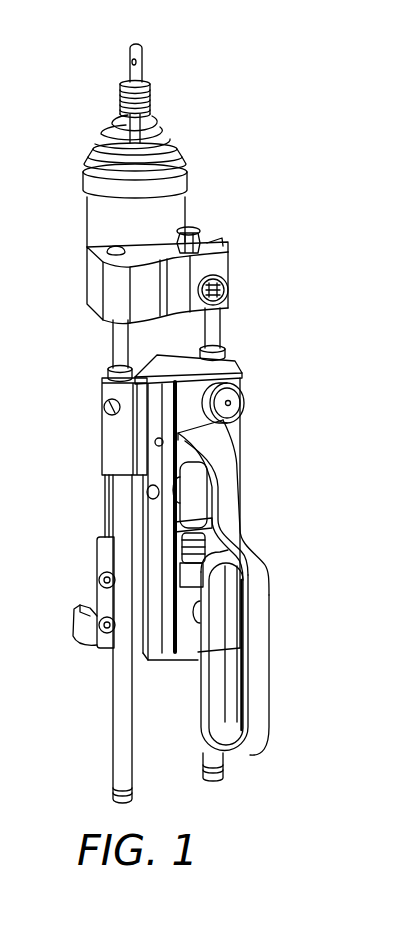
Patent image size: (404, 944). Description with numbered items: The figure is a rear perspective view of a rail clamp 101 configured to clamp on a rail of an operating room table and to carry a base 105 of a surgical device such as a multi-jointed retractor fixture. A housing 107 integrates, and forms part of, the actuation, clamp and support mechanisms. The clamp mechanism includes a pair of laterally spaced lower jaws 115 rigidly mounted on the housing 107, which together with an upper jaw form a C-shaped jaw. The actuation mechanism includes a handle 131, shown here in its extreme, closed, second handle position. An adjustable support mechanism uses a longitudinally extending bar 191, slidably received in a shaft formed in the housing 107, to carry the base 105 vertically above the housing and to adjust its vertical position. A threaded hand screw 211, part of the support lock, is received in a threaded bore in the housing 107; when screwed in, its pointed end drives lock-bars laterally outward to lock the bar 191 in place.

The rail clamp 101 is at (108, 448).
The base 105 is at (92, 283).
The housing 107 is at (133, 525).
The lower jaws 115 is at (77, 622).
The handle 131 is at (256, 557).
The bar 191 is at (118, 738).
The hand screw 211 is at (246, 405).